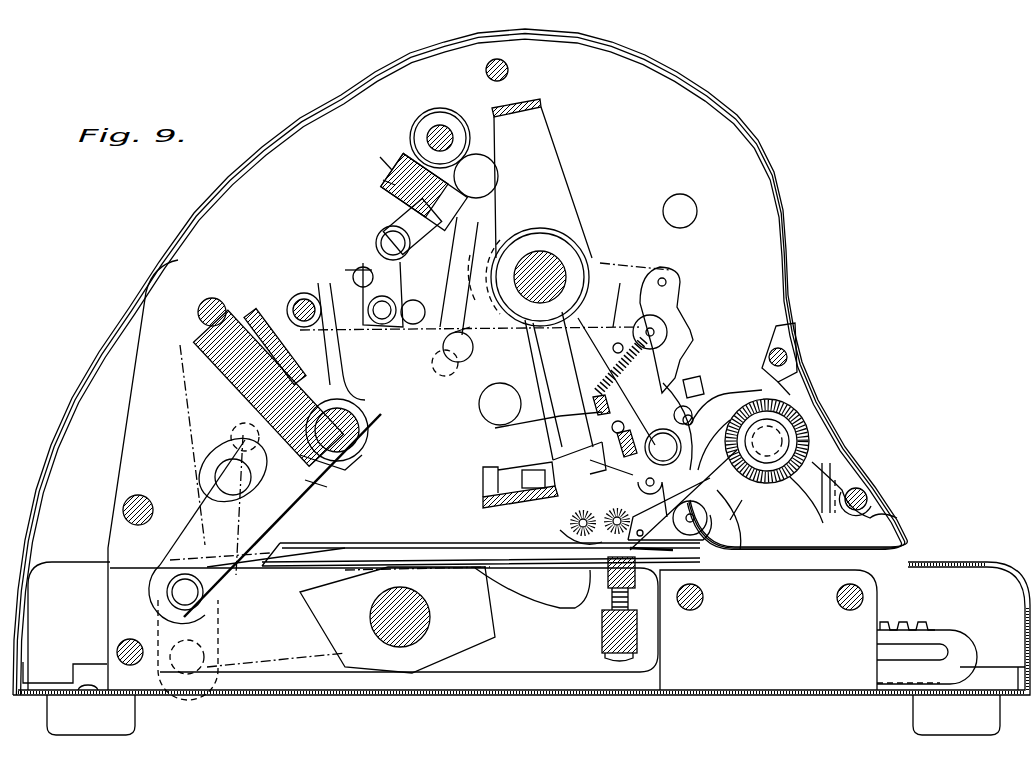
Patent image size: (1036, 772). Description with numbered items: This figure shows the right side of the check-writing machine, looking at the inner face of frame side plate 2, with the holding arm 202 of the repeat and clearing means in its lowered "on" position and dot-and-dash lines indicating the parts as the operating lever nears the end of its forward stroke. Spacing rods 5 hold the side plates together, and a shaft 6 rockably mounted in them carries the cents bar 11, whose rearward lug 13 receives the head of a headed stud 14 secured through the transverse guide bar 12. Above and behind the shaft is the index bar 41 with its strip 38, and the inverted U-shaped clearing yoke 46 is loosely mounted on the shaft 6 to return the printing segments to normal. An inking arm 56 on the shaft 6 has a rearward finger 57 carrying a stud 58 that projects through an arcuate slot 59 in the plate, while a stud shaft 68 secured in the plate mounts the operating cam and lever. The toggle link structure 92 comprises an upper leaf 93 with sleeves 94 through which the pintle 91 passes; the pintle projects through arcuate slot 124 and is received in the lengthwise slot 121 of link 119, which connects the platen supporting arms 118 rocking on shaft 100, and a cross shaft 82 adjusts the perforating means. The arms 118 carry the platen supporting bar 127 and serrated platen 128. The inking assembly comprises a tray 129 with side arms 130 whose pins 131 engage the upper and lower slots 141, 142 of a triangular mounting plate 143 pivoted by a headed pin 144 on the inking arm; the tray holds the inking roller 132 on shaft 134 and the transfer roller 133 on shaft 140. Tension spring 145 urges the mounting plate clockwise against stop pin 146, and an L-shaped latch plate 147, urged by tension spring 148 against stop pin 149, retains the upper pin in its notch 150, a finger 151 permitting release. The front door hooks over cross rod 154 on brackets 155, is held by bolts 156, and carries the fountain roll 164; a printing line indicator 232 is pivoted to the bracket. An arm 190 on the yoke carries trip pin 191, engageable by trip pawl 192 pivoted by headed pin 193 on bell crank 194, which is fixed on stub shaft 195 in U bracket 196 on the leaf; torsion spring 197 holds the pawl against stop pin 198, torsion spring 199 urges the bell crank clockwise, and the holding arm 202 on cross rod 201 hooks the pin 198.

The side plate 2 is at (706, 130).
The spacing rod 5 is at (512, 70).
The shaft 6 is at (553, 265).
The cents bar 11 is at (545, 372).
The guide bar 12 is at (488, 505).
The lug 13 is at (513, 463).
The headed stud 14 is at (522, 478).
The strip 38 is at (380, 157).
The index bar 41 is at (412, 168).
The clearing yoke 46 is at (542, 113).
The inking arm 56 is at (604, 285).
The finger 57 is at (450, 275).
The stud 58 is at (417, 297).
The arcuate slot 59 is at (452, 375).
The stud shaft 68 is at (478, 403).
The cross shaft 82 is at (123, 507).
The pintle 91 is at (364, 447).
The toggle link structure 92 is at (198, 371).
The upper member or leaf 93 is at (240, 370).
The sleeve 94 is at (343, 470).
The shaft 100 is at (388, 618).
The platen supporting arm 118 is at (518, 649).
The link 119 is at (295, 503).
The slot 121 is at (327, 487).
The arcuate slot 124 is at (197, 474).
The platen supporting bar 127 is at (637, 647).
The platen 128 is at (640, 592).
The tray 129 is at (586, 553).
The side arm 130 is at (720, 400).
The pin 131 is at (703, 387).
The inking roller 132 is at (566, 541).
The transfer roller 133 is at (590, 520).
The shaft 134 is at (572, 528).
The shaft 140 is at (663, 500).
The upper slot 141 is at (735, 377).
The lower slot 142 is at (644, 534).
The mounting plate 143 is at (611, 396).
The headed pin 144 is at (634, 432).
The tension spring 145 is at (630, 318).
The stop pin 146 is at (612, 305).
The latch plate 147 is at (655, 400).
The tension spring 148 is at (522, 430).
The stop pin 149 is at (553, 433).
The notch 150 is at (700, 393).
The finger 151 is at (717, 393).
The cross rod 154 is at (862, 497).
The bracket 155 is at (790, 392).
The bolt 156 is at (787, 357).
The ink supply or fountain roll 164 is at (802, 428).
The arm 190 is at (478, 252).
The trip pin 191 is at (455, 332).
The trip pawl 192 is at (433, 212).
The headed pin 193 is at (395, 243).
The bell crank 194 is at (352, 268).
The stub shaft 195 is at (292, 305).
The U bracket 196 is at (240, 318).
The torsion spring 197 is at (370, 270).
The stop pin 198 is at (353, 267).
The torsion spring 199 is at (345, 272).
The cross rod 201 is at (443, 127).
The holding arm 202 is at (383, 180).
The printing line indicator 232 is at (692, 571).